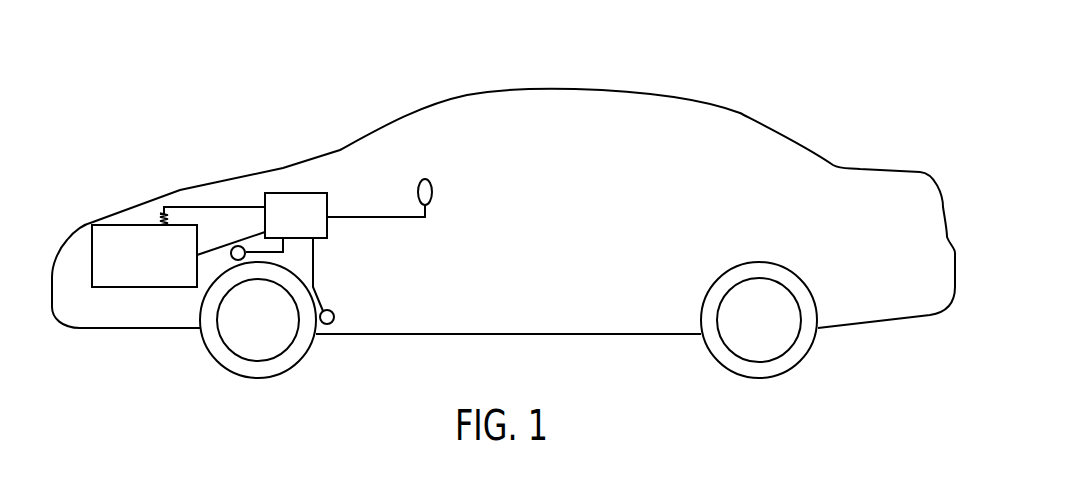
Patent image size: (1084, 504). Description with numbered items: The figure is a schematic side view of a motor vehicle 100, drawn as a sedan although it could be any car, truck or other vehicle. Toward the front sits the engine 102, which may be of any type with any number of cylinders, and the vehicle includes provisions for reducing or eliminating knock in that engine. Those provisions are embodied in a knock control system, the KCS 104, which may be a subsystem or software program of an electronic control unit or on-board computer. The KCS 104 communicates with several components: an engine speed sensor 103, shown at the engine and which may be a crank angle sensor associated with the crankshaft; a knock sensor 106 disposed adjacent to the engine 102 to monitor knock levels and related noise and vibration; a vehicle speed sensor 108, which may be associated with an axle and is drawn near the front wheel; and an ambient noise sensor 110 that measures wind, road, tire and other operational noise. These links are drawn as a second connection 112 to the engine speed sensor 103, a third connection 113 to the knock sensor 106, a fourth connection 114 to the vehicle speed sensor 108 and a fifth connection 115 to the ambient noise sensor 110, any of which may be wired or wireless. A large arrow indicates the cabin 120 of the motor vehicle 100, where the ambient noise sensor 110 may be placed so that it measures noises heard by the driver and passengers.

The motor vehicle 100 is at (572, 90).
The engine 102 is at (105, 230).
The engine speed sensor 103 is at (160, 213).
The knock control system (KCS) 104 is at (282, 203).
The knock sensor 106 is at (200, 256).
The vehicle speed sensor 108 is at (333, 321).
The ambient noise sensor 110 is at (432, 188).
The second connection 112 is at (178, 205).
The third connection 113 is at (244, 260).
The fourth connection 114 is at (315, 265).
The fifth connection 115 is at (373, 215).
The cabin 120 is at (712, 185).